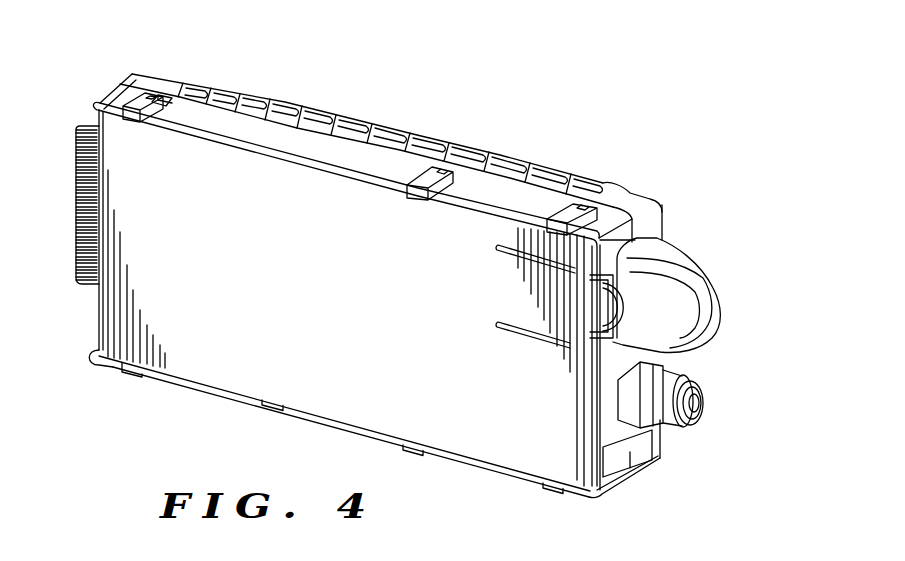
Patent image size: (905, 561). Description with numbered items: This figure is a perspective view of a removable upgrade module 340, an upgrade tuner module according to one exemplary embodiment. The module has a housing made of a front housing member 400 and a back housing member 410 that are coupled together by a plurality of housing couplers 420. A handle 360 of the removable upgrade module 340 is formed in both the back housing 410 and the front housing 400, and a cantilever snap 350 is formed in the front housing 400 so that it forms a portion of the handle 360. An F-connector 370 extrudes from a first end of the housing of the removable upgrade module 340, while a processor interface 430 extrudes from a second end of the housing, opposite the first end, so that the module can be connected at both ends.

The removable upgrade module 340 is at (128, 478).
The cantilever snap 350 is at (563, 323).
The handle 360 is at (722, 312).
The F-connector 370 is at (703, 403).
The front housing member 400 is at (340, 302).
The back housing member 410 is at (430, 143).
The housing couplers 420 is at (158, 96).
The processor interface 430 is at (80, 130).